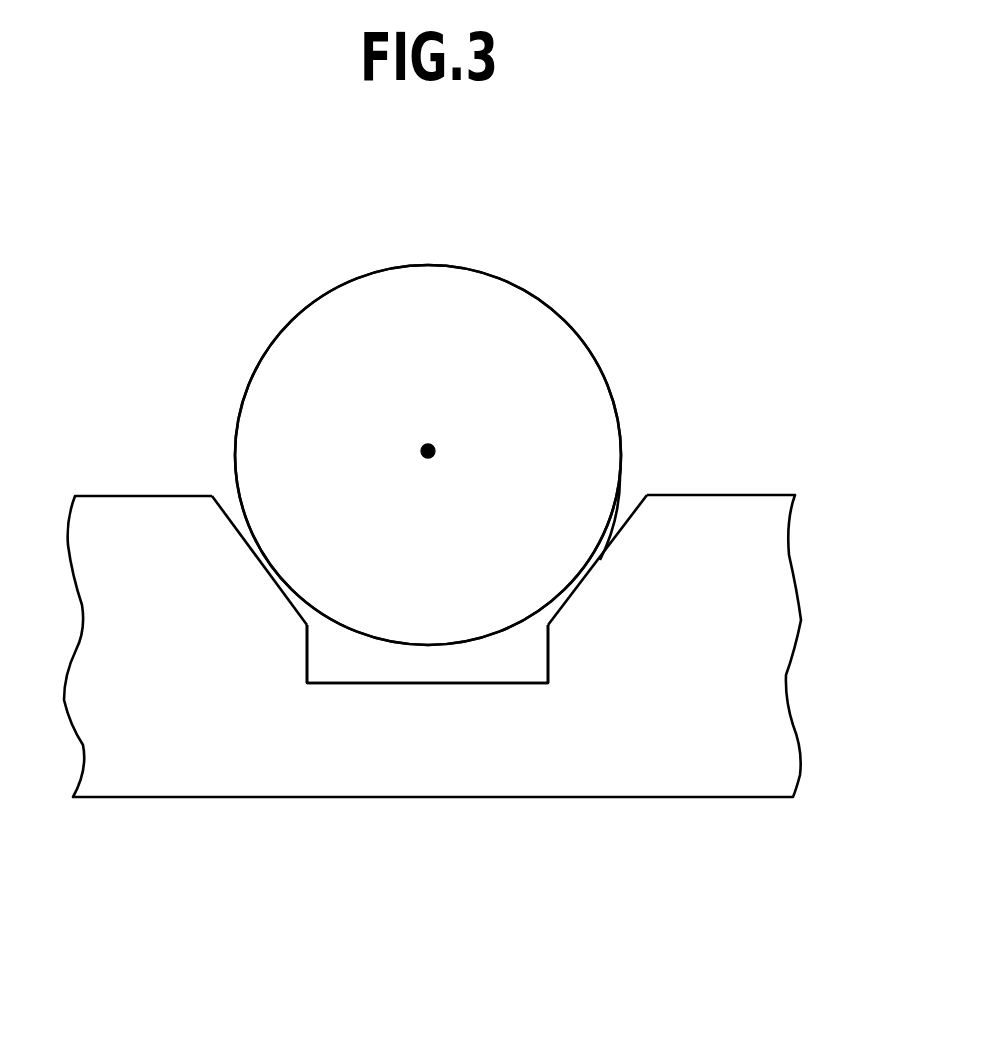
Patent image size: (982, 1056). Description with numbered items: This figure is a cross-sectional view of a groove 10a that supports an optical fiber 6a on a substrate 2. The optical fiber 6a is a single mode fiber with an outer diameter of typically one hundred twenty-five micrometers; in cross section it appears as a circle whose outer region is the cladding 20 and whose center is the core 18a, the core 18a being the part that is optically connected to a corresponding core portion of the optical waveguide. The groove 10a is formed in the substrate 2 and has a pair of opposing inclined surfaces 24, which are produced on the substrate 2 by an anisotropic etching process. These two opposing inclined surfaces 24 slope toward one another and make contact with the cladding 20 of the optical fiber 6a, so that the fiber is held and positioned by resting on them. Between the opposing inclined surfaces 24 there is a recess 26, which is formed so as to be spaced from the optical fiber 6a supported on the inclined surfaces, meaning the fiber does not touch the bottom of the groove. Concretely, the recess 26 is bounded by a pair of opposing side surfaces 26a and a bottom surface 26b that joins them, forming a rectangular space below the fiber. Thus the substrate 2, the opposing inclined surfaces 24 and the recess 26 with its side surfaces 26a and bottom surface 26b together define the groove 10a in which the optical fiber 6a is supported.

The substrate 2 is at (687, 797).
The optical fiber 6a is at (573, 326).
The groove 10a is at (643, 441).
The core 18a is at (428, 451).
The cladding 20 is at (430, 300).
The opposing inclined surfaces 24 is at (219, 507).
The recess 26 is at (462, 680).
The opposing side surfaces 26a is at (307, 658).
The bottom surface 26b is at (373, 683).